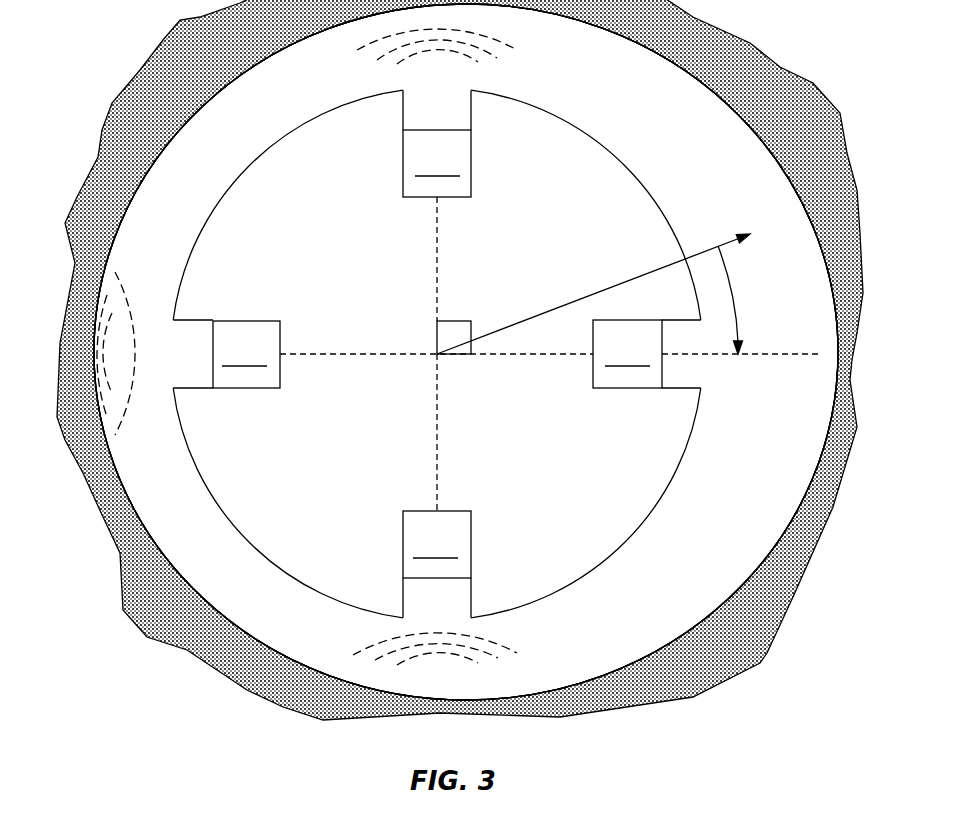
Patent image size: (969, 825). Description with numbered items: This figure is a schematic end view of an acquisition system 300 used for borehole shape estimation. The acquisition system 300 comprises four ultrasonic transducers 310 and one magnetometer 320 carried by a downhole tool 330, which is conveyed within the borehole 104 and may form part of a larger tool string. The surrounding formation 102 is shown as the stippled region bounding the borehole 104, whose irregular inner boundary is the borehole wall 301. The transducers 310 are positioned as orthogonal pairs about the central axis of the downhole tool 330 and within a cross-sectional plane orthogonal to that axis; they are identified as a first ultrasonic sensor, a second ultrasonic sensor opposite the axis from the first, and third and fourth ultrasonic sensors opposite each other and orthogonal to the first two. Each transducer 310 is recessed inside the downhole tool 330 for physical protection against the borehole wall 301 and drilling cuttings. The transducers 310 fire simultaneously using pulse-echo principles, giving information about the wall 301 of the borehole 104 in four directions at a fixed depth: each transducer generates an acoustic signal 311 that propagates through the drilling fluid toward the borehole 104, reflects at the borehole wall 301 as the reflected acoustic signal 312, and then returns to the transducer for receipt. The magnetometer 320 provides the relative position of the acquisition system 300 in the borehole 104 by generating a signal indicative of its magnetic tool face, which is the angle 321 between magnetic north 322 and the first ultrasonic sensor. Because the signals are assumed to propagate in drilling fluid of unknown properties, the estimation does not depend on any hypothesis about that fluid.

The housing wall 102 is at (752, 648).
The borehole 104 is at (669, 628).
The acquisition system 300 is at (636, 140).
The borehole wall 301 is at (598, 678).
The ultrasonic transducers 310 is at (403, 160).
The acoustic signal 311 is at (346, 63).
The acoustic signal 312 is at (139, 256).
The magnetometer 320 is at (453, 320).
The angle 321 is at (741, 305).
The magnetic north 322 is at (640, 268).
The downhole tool 330 is at (673, 482).